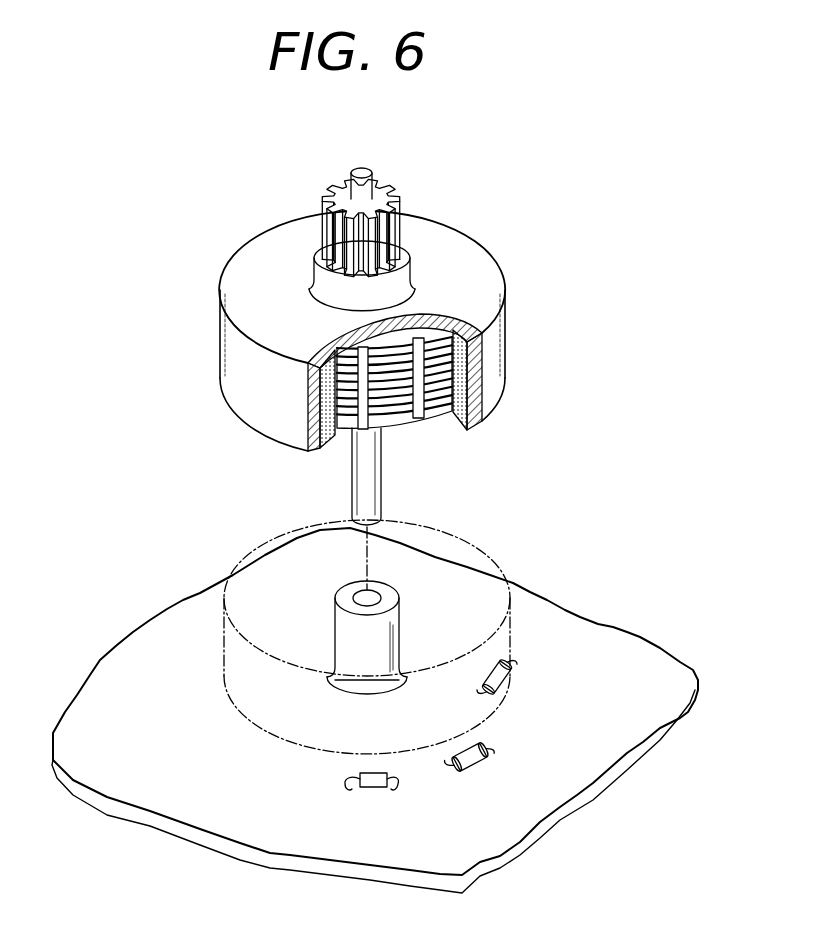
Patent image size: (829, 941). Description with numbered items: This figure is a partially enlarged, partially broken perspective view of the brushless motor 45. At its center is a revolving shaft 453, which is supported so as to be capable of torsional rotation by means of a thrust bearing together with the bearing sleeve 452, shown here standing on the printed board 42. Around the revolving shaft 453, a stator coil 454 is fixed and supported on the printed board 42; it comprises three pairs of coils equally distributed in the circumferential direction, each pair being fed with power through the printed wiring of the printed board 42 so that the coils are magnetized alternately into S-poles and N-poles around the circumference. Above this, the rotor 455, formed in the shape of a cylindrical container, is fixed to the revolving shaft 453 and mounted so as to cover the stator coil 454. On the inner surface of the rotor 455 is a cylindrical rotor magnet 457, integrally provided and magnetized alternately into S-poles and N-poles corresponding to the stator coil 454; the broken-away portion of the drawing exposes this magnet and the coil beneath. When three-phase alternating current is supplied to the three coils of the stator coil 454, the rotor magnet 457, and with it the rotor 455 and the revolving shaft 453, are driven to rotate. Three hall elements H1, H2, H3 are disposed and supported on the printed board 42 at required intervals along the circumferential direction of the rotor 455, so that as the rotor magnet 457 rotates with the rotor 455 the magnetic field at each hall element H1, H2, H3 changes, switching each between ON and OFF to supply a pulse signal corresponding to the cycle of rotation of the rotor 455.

The brushless motor 45 is at (418, 346).
The rotor 455 is at (482, 297).
The rotor magnet 457 is at (470, 377).
The stator coil 454 is at (430, 424).
The revolving shaft 453 is at (353, 481).
The bearing sleeve 452 is at (387, 633).
The printed board 42 is at (597, 637).
The hall element H1 is at (510, 668).
The hall element H2 is at (490, 750).
The hall element H3 is at (372, 787).